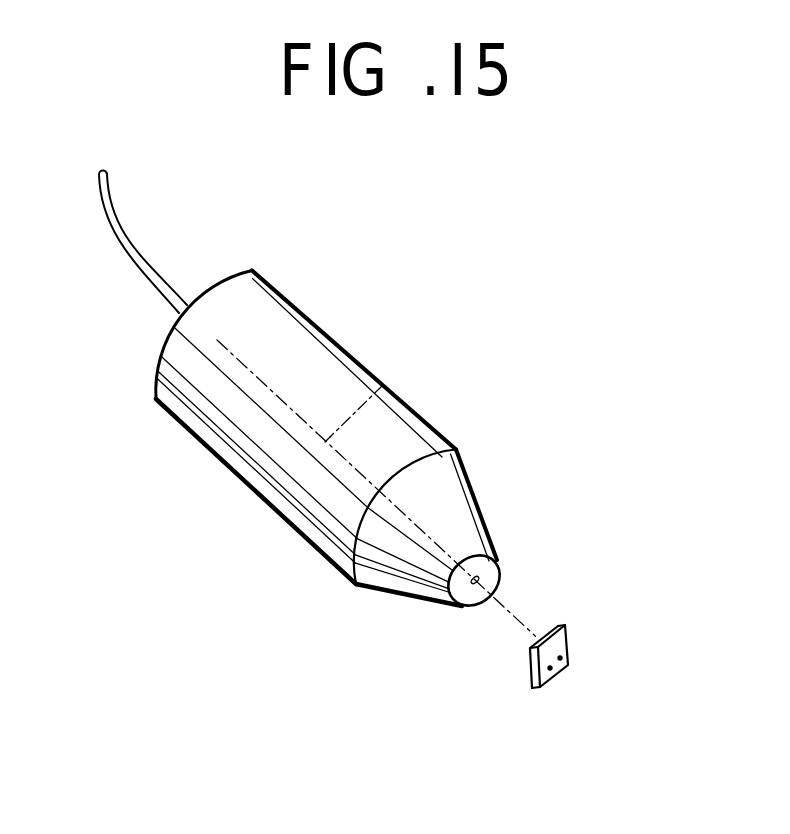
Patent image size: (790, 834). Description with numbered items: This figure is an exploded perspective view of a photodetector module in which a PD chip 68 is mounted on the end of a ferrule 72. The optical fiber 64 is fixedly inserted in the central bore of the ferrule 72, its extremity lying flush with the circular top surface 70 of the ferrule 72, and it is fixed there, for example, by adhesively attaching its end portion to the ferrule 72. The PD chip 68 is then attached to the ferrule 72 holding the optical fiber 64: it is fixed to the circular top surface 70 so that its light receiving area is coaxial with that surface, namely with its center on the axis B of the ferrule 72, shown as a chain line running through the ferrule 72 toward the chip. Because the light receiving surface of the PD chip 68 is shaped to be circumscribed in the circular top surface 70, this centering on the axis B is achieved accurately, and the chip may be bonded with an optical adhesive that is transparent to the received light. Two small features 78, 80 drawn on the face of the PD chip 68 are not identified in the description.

The optical fiber 64 is at (140, 277).
The ferrule 72 is at (249, 487).
The axis of the ferrule B is at (383, 385).
The circular top surface 70 is at (490, 563).
The PD chip 68 is at (590, 640).
The hole 80 is at (562, 657).
The hole 78 is at (552, 671).